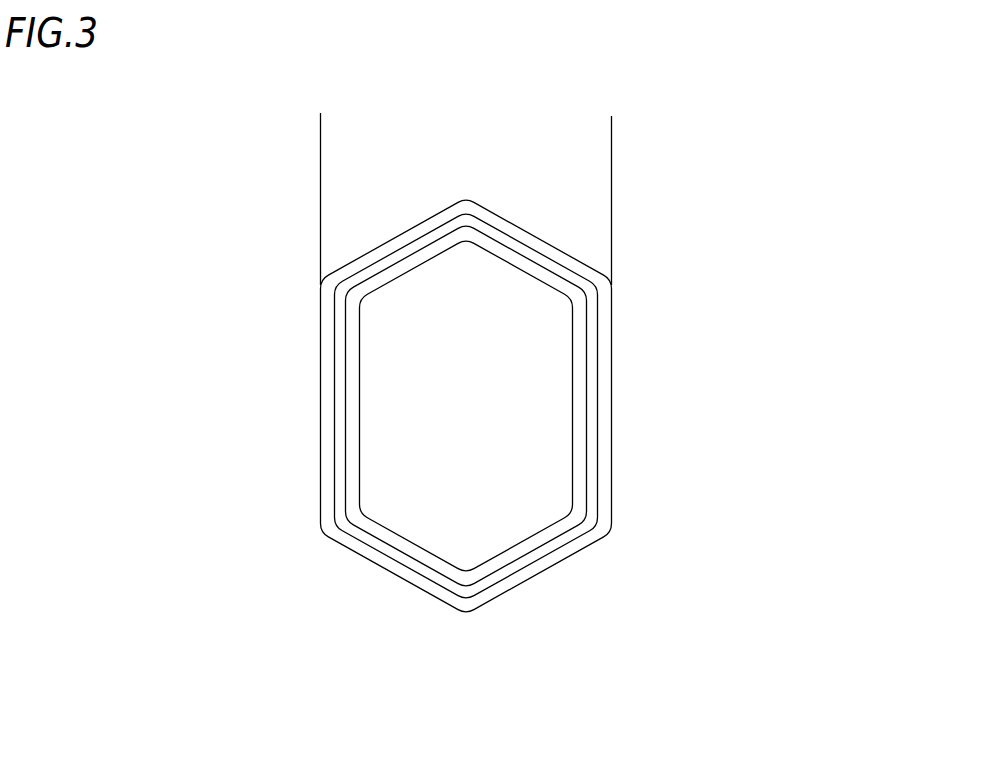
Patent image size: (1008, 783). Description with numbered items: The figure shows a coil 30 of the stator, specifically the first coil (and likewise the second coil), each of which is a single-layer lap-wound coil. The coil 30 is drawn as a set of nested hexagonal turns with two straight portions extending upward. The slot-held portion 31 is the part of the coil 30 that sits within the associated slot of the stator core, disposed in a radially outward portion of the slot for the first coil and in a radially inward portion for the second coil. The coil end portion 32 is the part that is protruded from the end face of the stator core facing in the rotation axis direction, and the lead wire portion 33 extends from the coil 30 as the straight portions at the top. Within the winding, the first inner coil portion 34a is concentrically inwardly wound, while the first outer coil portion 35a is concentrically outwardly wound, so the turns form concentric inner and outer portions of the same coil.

The coil 30 is at (652, 96).
The slot-held portion 31 is at (323, 383).
The coil end portion 32 is at (503, 172).
The lead wire portion 33 is at (320, 157).
The first inner coil portion 34a is at (573, 463).
The first outer coil portion 35a is at (605, 477).